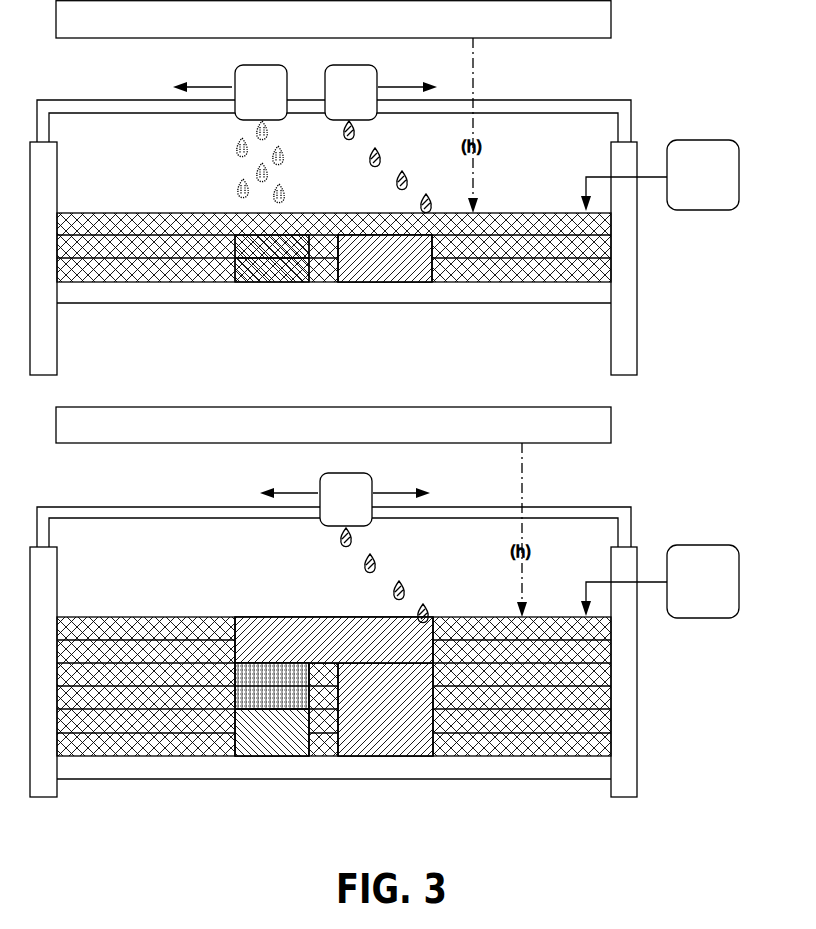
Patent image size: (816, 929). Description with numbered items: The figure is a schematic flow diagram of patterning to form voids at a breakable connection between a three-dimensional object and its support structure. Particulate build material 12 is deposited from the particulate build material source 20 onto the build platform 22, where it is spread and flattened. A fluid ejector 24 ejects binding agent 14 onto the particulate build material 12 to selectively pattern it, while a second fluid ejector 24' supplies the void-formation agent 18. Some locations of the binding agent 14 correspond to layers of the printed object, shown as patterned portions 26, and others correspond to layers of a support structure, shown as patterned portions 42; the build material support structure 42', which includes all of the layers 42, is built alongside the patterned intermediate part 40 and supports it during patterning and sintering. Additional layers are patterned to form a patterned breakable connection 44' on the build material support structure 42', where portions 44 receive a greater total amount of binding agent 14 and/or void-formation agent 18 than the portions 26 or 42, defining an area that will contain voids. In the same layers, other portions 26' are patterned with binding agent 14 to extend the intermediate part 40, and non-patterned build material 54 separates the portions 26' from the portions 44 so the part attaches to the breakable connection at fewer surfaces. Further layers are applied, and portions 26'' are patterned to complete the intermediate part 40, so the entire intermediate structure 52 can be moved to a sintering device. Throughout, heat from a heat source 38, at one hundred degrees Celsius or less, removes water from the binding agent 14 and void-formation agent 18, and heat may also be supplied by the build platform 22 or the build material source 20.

The particulate build material 12 is at (101, 268).
The binding agent 14 is at (408, 180).
The void-formation agent 18 is at (229, 190).
The particulate build material source 20 is at (695, 190).
The build platform 22 is at (529, 290).
The fluid ejector 24 is at (348, 295).
The fluid ejector 24' is at (230, 92).
The patterned portions 26 is at (334, 534).
The other portions 26' is at (559, 708).
The portions 26'' is at (334, 610).
The heat source 38 is at (326, 30).
The patterned intermediate part 40 is at (452, 645).
The patterned portions 42 is at (236, 534).
The build material support structure 42' is at (263, 548).
The patterned portions 44 is at (218, 647).
The patterned breakable connection 44' is at (239, 748).
The intermediate structure 52 is at (252, 590).
The non-patterned build material 54 is at (323, 711).